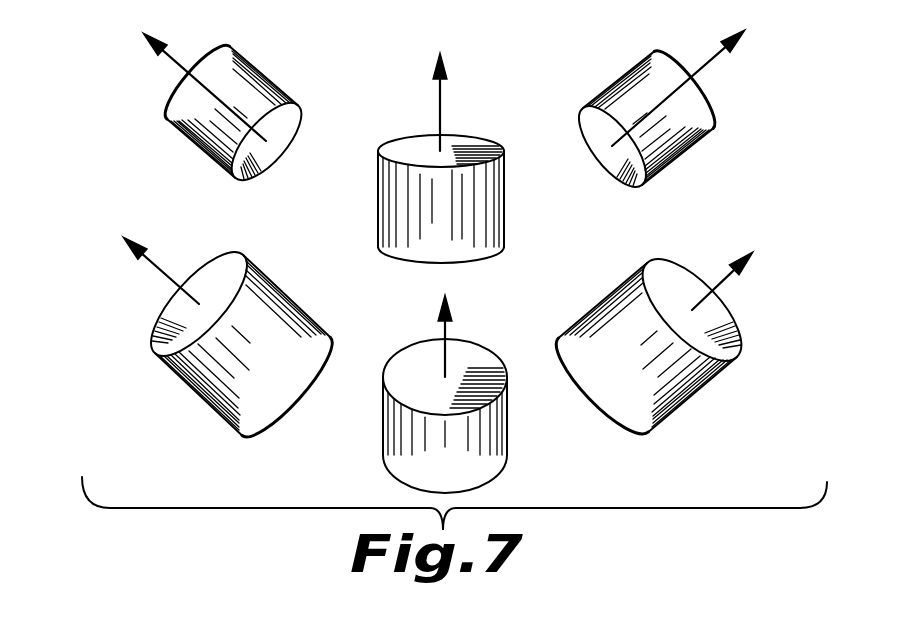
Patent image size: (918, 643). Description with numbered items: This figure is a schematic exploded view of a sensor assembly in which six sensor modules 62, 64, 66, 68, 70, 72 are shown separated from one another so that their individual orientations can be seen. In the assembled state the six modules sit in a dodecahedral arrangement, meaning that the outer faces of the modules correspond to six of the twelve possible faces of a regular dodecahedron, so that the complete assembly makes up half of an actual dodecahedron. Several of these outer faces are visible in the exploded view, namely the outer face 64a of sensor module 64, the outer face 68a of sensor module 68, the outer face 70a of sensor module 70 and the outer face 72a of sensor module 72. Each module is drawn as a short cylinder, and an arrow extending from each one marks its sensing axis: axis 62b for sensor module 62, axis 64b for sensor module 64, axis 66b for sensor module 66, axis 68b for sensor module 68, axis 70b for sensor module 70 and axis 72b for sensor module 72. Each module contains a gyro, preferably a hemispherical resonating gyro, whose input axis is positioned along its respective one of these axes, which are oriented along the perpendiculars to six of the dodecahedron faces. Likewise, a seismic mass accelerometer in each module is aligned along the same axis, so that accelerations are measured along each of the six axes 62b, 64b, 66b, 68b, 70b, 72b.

The sensor module 62 is at (689, 113).
The axis 62b is at (710, 60).
The sensor module 64 is at (485, 156).
The outer face 64a is at (465, 145).
The axis 64b is at (442, 97).
The sensor module 66 is at (249, 99).
The axis 66b is at (173, 56).
The sensor module 68 is at (197, 326).
The outer face 68a is at (173, 325).
The axis 68b is at (167, 272).
The sensor module 70 is at (692, 343).
The outer face 70a is at (727, 328).
The axis 70b is at (732, 285).
The sensor module 72 is at (441, 392).
The outer face 72a is at (475, 371).
The axis 72b is at (449, 356).